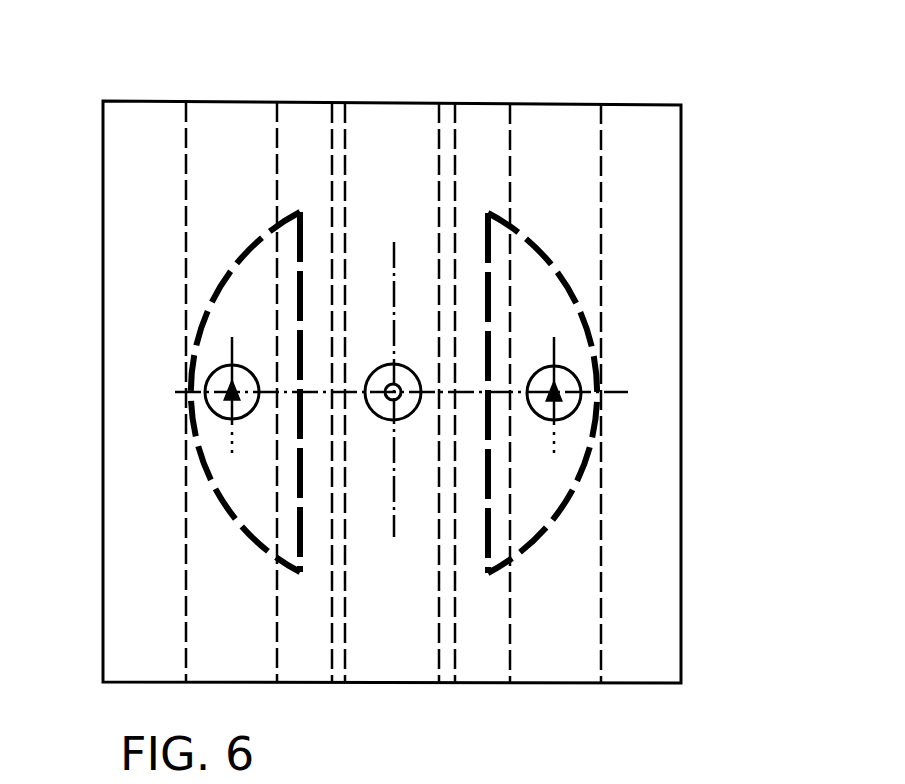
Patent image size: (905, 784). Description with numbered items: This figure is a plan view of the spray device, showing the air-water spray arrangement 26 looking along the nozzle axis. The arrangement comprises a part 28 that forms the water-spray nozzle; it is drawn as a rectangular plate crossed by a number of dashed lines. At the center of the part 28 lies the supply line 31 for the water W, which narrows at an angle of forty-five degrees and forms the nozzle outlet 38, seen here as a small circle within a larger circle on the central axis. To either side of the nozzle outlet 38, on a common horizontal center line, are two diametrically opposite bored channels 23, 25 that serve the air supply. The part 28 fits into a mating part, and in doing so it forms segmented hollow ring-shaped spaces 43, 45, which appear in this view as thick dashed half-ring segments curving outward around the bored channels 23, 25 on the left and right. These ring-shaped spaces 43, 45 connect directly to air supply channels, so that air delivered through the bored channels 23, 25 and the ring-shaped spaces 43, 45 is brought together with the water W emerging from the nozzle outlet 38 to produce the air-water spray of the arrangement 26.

The air-water spray arrangement 26 is at (705, 130).
The part forming the water-spray nozzle 28 is at (630, 123).
The supply line 31 is at (408, 370).
The nozzle outlet 38 is at (420, 396).
The bored channel for air supply 23 is at (207, 410).
The bored channel for air supply 25 is at (580, 410).
The segmented hollow ring-shaped space 43 is at (218, 452).
The segmented hollow ring-shaped space 45 is at (572, 453).
The water W is at (383, 408).